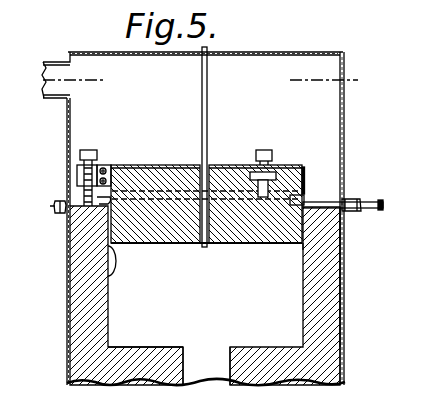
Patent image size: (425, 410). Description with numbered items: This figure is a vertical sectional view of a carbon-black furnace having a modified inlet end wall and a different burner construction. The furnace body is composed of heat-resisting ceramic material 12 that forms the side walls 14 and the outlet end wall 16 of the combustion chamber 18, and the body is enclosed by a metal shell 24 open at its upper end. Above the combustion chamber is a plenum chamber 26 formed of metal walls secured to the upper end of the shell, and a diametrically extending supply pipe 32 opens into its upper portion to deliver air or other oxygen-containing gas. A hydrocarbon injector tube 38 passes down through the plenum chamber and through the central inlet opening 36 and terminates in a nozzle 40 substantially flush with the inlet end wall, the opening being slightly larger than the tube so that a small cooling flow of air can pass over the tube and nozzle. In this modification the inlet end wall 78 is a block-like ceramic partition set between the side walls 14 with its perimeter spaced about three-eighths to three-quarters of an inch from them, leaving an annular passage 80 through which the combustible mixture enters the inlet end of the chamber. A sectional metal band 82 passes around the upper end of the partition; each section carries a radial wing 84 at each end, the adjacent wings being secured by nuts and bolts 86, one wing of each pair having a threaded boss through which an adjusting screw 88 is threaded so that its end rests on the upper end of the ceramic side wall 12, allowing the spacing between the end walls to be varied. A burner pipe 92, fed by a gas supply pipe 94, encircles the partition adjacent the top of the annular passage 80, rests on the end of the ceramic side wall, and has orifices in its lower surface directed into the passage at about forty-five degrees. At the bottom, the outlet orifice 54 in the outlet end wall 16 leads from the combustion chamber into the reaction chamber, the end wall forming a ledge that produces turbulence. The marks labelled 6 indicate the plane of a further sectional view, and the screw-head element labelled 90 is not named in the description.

The section line 6- 6 is at (34, 112).
The heat-resisting ceramic material 12 is at (80, 250).
The side walls 14 is at (108, 285).
The outlet end wall 16 is at (147, 347).
The combustion chamber 18 is at (300, 244).
The metal shell 24 is at (346, 328).
The plenum chamber 26 is at (205, 218).
The supply pipe 32 is at (50, 62).
The inlet opening 36 is at (208, 166).
The hydrocarbon injector tube 38 is at (202, 115).
The nozzle 40 is at (198, 246).
The outlet orifice 54 is at (206, 345).
The inlet end wall 78 is at (344, 260).
The annular passage 80 is at (110, 274).
The sectional metal band 82 is at (306, 172).
The wing 84 is at (78, 188).
The nuts and bolts 86 is at (104, 167).
The adjusting screws 88 is at (98, 166).
The screw 90 is at (90, 148).
The burner pipe 92 is at (316, 196).
The gas supply pipe 94 is at (356, 204).